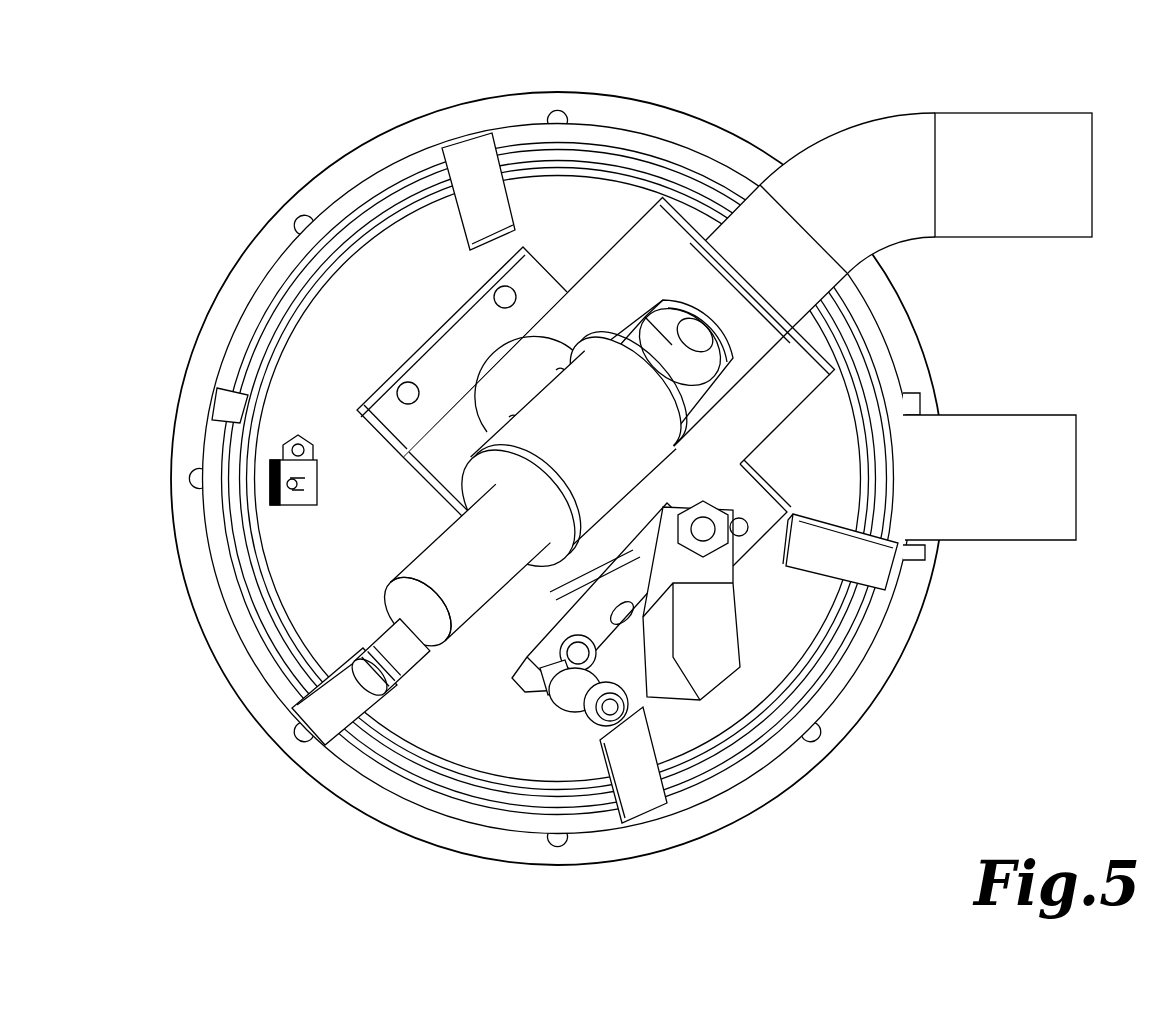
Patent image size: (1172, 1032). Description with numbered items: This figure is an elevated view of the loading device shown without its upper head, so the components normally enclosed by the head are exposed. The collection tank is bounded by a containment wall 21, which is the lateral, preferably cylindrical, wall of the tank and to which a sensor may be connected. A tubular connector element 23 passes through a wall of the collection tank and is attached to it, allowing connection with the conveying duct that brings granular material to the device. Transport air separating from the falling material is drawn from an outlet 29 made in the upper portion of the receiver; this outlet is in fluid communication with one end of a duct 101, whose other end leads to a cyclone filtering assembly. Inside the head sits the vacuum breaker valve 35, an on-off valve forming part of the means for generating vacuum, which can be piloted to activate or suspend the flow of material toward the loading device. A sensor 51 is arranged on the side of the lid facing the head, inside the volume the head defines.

The containment wall 21 is at (853, 732).
The tubular connector element 23 is at (1040, 540).
The outlet 29 is at (847, 129).
The duct 101 is at (1022, 238).
The vacuum breaker valve 35 is at (394, 356).
The sensor 51 is at (290, 509).